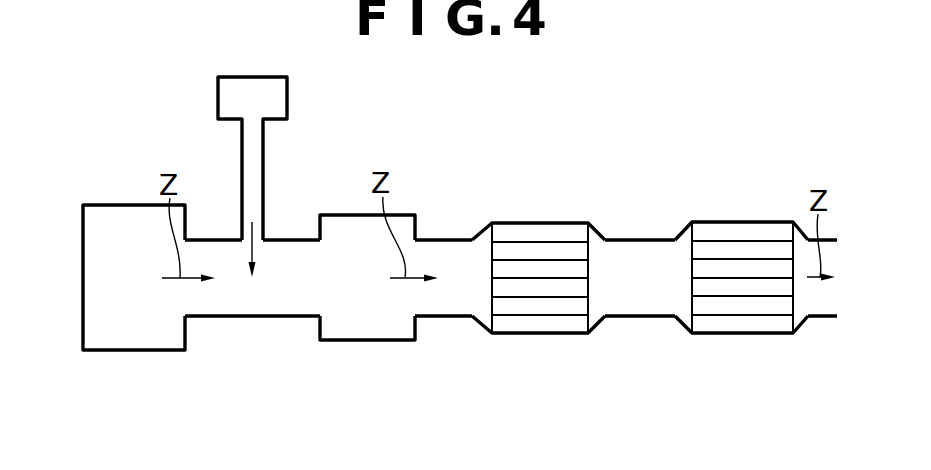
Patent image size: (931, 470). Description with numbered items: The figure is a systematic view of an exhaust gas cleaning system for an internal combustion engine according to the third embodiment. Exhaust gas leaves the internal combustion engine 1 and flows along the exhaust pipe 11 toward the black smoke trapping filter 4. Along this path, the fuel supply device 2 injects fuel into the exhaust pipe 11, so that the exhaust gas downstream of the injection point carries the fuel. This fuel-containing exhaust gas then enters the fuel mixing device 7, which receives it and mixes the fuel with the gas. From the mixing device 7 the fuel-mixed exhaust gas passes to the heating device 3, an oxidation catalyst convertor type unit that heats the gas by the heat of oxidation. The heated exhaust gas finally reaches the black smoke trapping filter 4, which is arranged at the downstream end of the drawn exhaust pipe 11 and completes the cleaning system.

The internal combustion engine 1 is at (117, 343).
The fuel supply device 2 is at (282, 103).
The heating device 3 is at (543, 330).
The black smoke trapping filter 4 is at (735, 328).
The fuel mixing device 7 is at (367, 333).
The exhaust pipe 11 is at (223, 353).